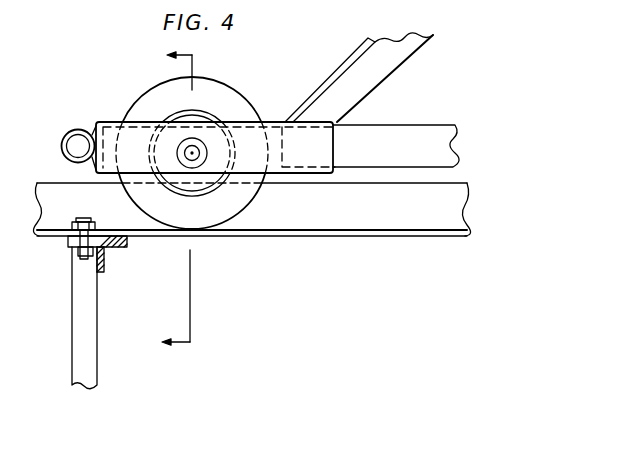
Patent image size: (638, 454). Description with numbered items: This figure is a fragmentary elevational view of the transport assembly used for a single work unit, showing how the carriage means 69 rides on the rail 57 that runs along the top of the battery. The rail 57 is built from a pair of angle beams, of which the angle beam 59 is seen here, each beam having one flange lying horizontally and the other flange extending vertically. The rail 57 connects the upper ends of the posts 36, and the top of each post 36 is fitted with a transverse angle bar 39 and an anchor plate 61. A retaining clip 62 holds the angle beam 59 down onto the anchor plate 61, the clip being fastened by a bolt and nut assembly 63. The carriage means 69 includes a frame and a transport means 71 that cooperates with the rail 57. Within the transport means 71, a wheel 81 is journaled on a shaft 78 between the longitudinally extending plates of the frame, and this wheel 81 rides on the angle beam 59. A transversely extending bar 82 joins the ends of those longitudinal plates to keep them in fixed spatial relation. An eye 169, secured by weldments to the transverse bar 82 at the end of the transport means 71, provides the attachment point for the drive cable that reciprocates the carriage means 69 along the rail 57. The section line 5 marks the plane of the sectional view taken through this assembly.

The section line 5- 5 is at (162, 200).
The post 36 is at (82, 331).
The transverse angle bar 39 is at (104, 263).
The rail 57 is at (45, 172).
The angle beam 59 is at (380, 220).
The anchor plate 61 is at (130, 240).
The retaining clip 62 is at (117, 200).
The bolt and nut assembly 63 is at (84, 218).
The carriage means 69 is at (335, 62).
The transport means 71 is at (120, 86).
The shaft 78 is at (192, 155).
The wheel 81 is at (217, 93).
The transversely extending bar 82 is at (95, 123).
The eye 169 is at (62, 143).